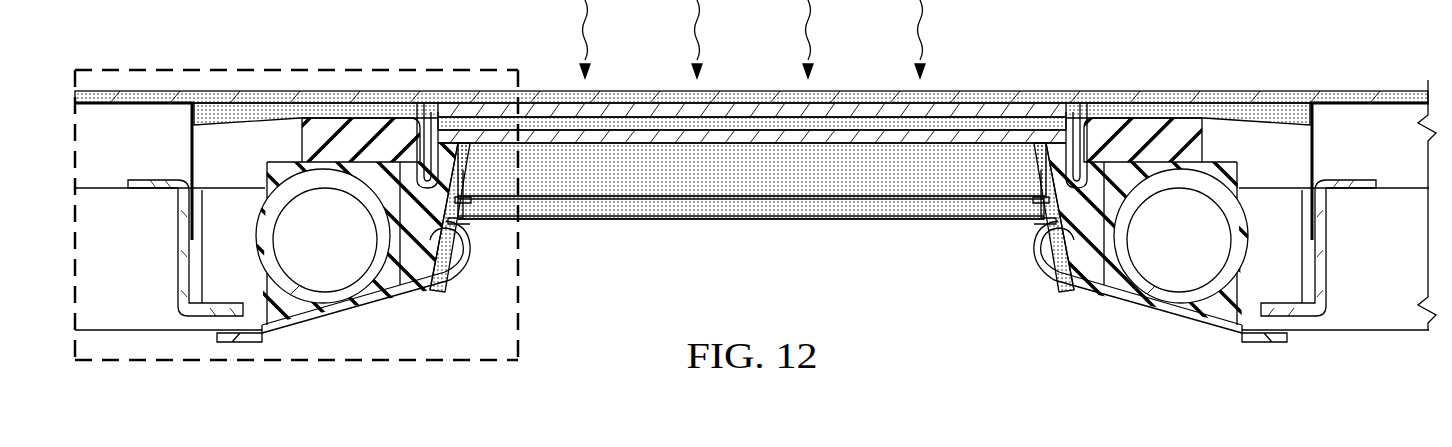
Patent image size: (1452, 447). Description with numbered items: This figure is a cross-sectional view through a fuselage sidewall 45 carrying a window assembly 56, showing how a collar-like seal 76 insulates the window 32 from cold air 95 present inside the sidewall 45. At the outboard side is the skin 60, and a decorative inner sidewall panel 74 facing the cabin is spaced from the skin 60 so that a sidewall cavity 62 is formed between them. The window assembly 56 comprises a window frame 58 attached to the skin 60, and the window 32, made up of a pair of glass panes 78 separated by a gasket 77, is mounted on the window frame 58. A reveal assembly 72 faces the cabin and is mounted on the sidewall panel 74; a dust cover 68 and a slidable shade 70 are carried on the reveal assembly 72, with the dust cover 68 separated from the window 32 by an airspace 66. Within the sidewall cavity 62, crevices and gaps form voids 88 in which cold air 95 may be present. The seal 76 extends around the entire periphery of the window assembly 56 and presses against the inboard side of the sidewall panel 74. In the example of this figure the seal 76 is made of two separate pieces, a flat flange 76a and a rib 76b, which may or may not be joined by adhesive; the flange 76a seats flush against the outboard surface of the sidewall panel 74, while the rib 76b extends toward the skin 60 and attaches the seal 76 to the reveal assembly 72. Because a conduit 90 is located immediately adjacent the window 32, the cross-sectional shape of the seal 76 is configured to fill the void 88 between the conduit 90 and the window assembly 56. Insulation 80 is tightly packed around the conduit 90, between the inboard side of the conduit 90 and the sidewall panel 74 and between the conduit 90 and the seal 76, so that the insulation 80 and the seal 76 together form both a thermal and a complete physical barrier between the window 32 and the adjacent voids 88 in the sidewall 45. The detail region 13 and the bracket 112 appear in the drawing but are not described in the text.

The detail region 13 is at (218, 68).
The window 32 is at (655, 100).
The fuselage sidewall 45 is at (120, 148).
The window assembly 56 is at (928, 292).
The window frame 58 is at (398, 105).
The skin 60 is at (1328, 95).
The sidewall cavity 62 is at (1383, 214).
The airspace 66 is at (727, 174).
The dust cover 68 is at (850, 200).
The slidable shade 70 is at (612, 222).
The reveal assembly 72 is at (458, 270).
The inner sidewall panel 74 is at (365, 314).
The seal 76 is at (323, 118).
The flange 76a is at (368, 135).
The rib 76b is at (382, 186).
The gasket 77 is at (435, 110).
The glass panes 78 is at (1010, 133).
The insulation 80 is at (268, 168).
The void 88 is at (116, 125).
The conduit 90 is at (322, 290).
The cold air 95 is at (571, 32).
The bracket 112 is at (178, 264).